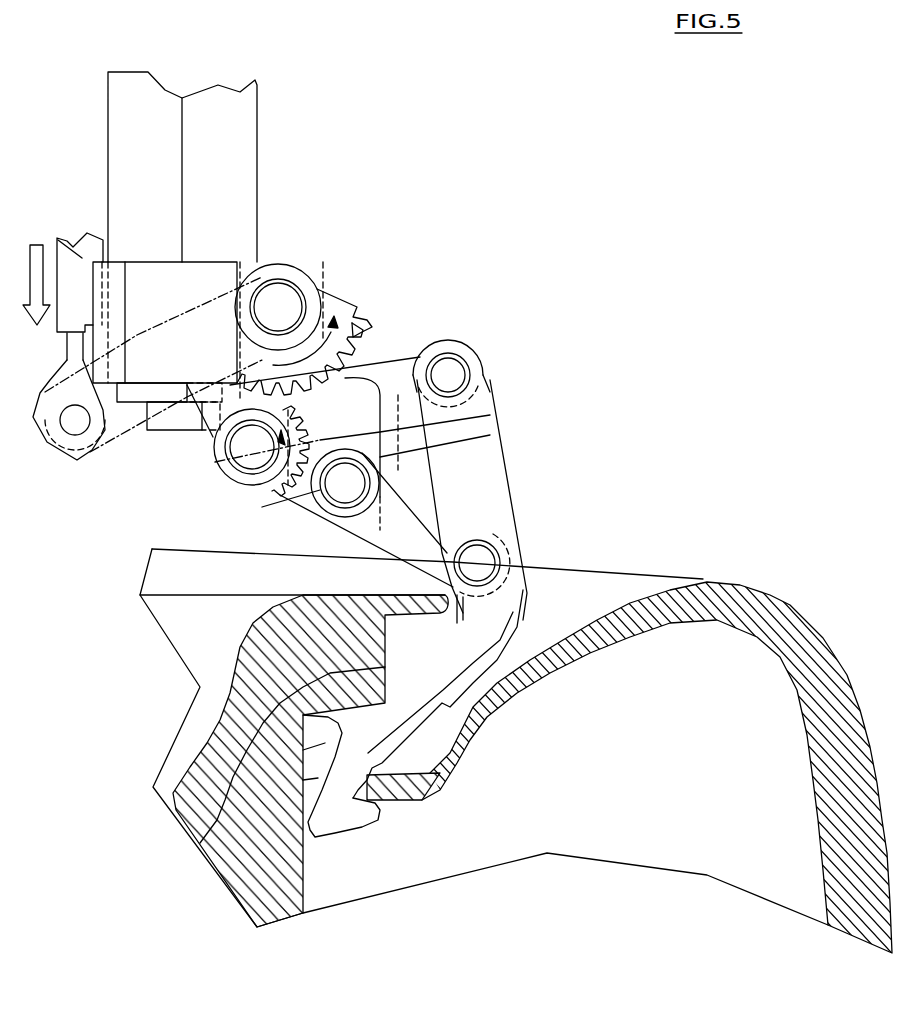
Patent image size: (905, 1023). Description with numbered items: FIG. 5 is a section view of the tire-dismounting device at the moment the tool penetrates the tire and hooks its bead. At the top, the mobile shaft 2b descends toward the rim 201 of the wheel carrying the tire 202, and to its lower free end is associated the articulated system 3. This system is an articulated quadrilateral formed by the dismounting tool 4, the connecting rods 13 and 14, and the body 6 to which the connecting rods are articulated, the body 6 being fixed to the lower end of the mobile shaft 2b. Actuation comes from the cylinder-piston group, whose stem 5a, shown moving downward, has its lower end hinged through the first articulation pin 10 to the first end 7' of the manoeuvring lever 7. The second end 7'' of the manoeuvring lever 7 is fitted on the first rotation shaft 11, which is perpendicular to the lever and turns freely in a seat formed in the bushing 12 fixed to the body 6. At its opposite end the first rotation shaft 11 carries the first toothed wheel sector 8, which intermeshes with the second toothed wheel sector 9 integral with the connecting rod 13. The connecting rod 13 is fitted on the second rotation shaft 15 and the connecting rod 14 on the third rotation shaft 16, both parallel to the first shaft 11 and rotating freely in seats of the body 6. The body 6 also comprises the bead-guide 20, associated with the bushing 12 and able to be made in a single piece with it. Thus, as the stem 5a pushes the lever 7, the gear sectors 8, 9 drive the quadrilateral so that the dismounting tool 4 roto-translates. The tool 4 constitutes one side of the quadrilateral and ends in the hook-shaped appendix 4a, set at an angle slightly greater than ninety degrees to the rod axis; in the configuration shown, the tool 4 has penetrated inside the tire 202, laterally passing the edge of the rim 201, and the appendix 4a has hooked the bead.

The articulated system 3 is at (442, 156).
The mobile shaft 2b is at (247, 127).
The bushing 12 is at (155, 285).
The stem 5a is at (58, 245).
The manoeuvring lever 7 is at (204, 293).
The first end 7' is at (77, 437).
The second end 7'' is at (309, 288).
The first articulation pin 10 is at (72, 424).
The first rotation shaft 11 is at (292, 303).
The first toothed wheel sector 8 is at (340, 302).
The connecting rod 13 is at (395, 385).
The body 6 is at (490, 415).
The connecting rod 14 is at (443, 523).
The second rotation shaft 15 is at (237, 450).
The second toothed wheel sector 9 is at (290, 477).
The third rotation shaft 16 is at (333, 490).
The rim 201 is at (190, 738).
The bead-guide 20 is at (200, 843).
The dismounting tool 4 is at (512, 610).
The tire 202 is at (813, 635).
The appendix 4a is at (333, 827).